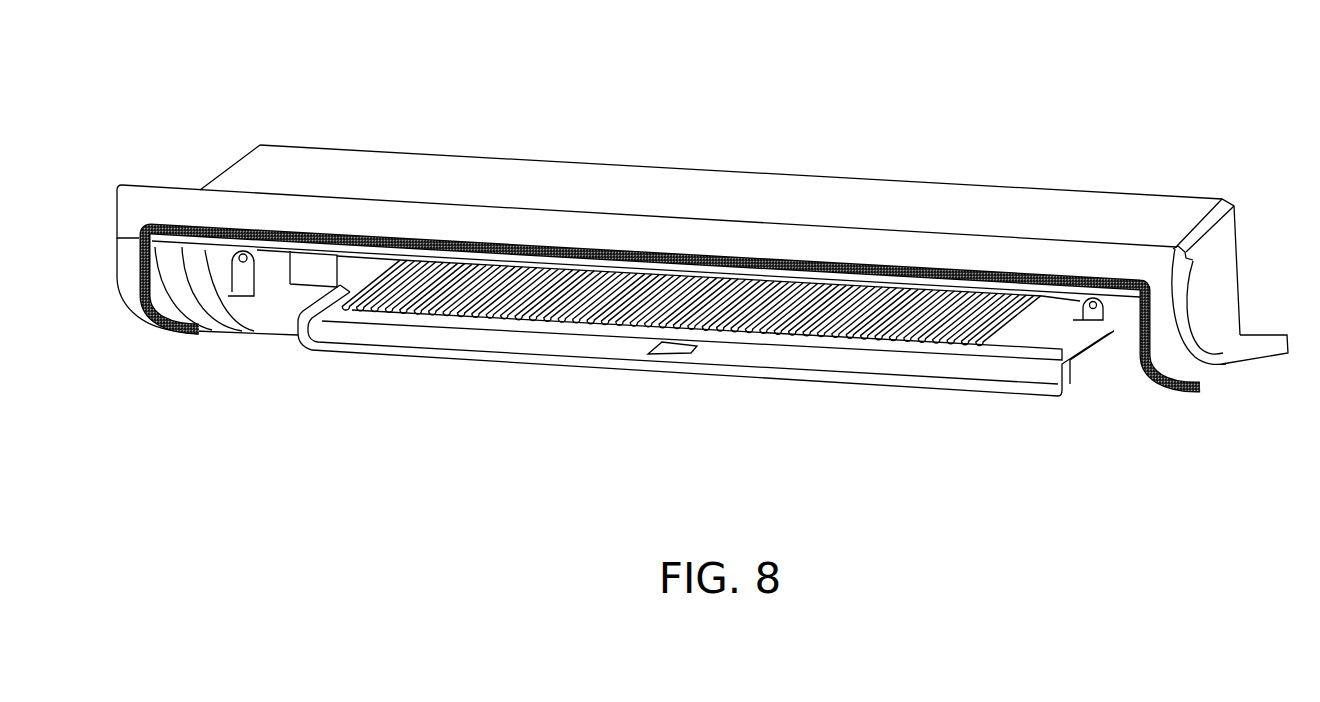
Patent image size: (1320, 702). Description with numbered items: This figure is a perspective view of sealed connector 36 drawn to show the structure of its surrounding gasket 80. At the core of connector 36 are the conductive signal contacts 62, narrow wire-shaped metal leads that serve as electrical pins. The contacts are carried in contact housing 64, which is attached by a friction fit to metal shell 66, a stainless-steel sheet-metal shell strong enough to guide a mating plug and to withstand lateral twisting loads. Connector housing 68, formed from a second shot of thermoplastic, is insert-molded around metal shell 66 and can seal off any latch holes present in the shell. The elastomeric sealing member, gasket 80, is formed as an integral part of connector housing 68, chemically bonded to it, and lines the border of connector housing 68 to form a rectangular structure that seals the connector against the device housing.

The connector 36 is at (820, 88).
The conductive signal contacts 62 is at (524, 288).
The contact housing 64 is at (975, 342).
The metal shell 66 is at (247, 285).
The connector housing 68 is at (1135, 199).
The gasket 80 is at (402, 234).